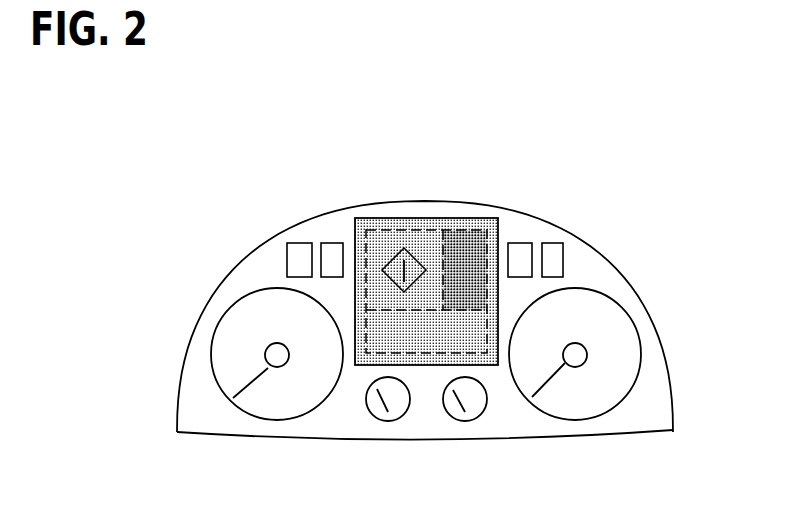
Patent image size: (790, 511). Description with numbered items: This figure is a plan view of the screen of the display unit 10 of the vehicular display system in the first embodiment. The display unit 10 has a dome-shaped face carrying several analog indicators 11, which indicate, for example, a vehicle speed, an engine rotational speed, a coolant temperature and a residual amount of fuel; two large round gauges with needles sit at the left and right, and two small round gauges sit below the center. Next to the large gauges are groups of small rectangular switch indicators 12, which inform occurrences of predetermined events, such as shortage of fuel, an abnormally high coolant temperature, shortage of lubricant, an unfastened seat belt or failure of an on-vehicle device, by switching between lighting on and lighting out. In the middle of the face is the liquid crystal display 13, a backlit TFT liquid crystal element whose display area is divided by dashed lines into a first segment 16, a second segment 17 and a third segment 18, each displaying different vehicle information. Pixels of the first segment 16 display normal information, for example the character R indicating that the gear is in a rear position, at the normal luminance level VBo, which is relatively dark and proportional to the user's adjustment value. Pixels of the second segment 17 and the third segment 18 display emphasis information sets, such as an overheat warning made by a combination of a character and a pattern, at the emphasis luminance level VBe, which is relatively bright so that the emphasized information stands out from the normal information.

The display unit 10 is at (208, 303).
The analog indicators 11 is at (268, 367).
The switch indicators 12 is at (285, 248).
The liquid crystal display 13 is at (355, 232).
The first segment 16 is at (473, 258).
The second segment 17 is at (432, 243).
The third segment 18 is at (398, 333).
The emphasis luminance level VBe is at (403, 238).
The normal luminance level VBo is at (458, 255).